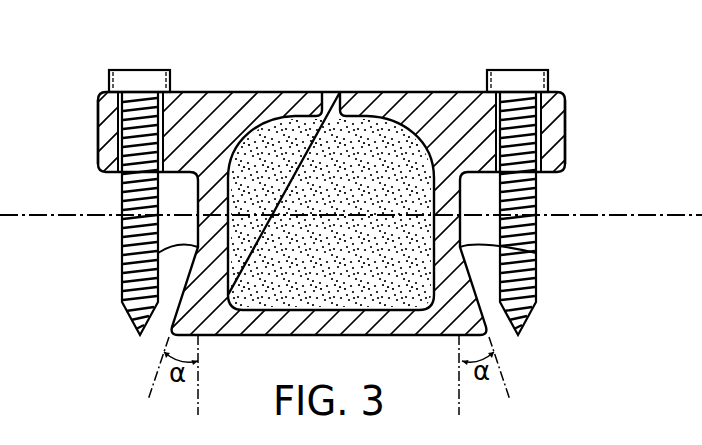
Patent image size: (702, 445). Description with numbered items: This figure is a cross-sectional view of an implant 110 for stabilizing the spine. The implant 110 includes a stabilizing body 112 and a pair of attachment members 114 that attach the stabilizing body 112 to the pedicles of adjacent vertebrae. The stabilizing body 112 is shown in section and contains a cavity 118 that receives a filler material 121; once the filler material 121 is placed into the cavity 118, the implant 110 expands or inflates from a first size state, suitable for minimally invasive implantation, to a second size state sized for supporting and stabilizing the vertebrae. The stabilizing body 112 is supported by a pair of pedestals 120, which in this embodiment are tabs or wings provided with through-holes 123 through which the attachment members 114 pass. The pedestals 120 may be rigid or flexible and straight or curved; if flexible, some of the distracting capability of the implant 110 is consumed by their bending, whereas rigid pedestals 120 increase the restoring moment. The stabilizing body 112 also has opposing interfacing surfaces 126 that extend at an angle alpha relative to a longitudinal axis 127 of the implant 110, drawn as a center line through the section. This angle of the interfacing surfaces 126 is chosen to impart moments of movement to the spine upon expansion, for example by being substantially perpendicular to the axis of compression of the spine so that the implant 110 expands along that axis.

The implant 110 is at (424, 57).
The stabilizing body 112 is at (298, 90).
The attachment members 114 is at (137, 69).
The cavity 118 is at (376, 302).
The pedestals 120 is at (99, 148).
The filler material 121 is at (341, 265).
The through-holes 123 is at (104, 110).
The interfacing surfaces 126 is at (121, 252).
The longitudinal axis 127 is at (588, 214).